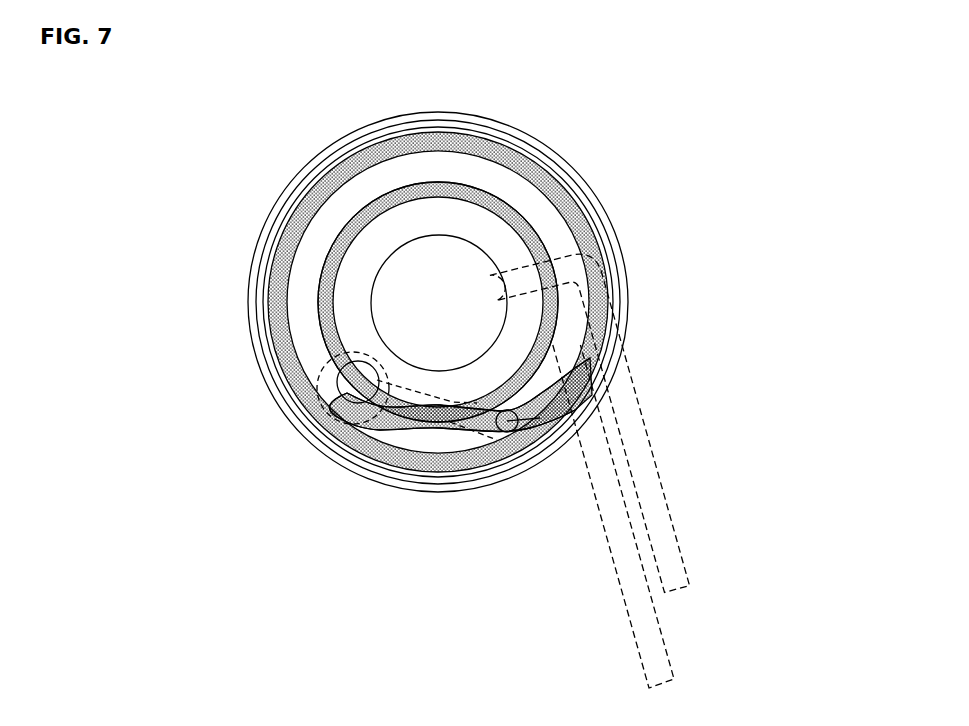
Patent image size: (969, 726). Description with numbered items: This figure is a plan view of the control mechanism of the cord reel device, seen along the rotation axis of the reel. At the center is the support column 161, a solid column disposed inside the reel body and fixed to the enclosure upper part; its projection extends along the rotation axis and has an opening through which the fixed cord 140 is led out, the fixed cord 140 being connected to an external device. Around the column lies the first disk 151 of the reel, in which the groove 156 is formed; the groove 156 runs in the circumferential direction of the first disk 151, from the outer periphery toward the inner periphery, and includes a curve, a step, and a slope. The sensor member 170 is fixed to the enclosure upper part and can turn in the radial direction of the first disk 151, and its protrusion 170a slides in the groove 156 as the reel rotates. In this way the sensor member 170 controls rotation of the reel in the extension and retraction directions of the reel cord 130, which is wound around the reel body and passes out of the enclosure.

The first disk 151 is at (510, 128).
The groove 156 is at (337, 418).
The support column 161 is at (439, 303).
The fixed cord 140 is at (640, 408).
The reel cord 130 is at (665, 648).
The sensor member 170 is at (462, 432).
The protrusion 170a is at (503, 433).